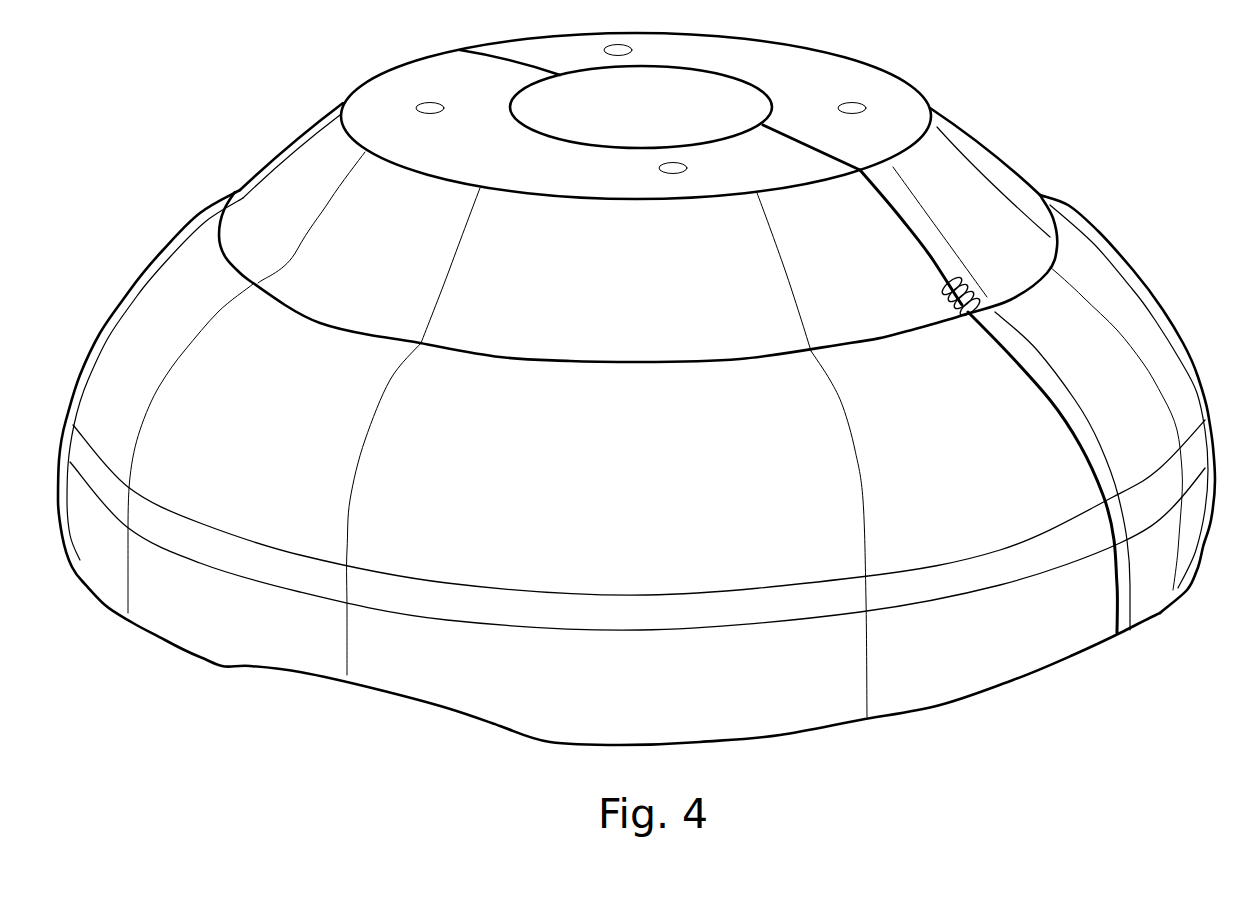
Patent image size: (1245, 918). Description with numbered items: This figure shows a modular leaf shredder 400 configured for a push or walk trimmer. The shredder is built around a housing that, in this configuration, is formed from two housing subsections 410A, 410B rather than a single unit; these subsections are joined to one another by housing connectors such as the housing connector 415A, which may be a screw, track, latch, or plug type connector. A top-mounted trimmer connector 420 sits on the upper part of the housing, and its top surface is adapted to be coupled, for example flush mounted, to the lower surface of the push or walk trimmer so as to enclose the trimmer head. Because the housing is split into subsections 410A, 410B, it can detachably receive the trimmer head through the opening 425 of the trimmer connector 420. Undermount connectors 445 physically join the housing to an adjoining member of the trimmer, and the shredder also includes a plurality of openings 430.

The modular leaf shredder 400 is at (647, 455).
The housing subsection 410A is at (1013, 687).
The housing subsection 410B is at (1168, 313).
The housing connector 415A is at (975, 292).
The trimmer connector 420 is at (778, 98).
The opening 425 is at (694, 125).
The openings 430 is at (350, 687).
The undermount connector 445 is at (437, 109).